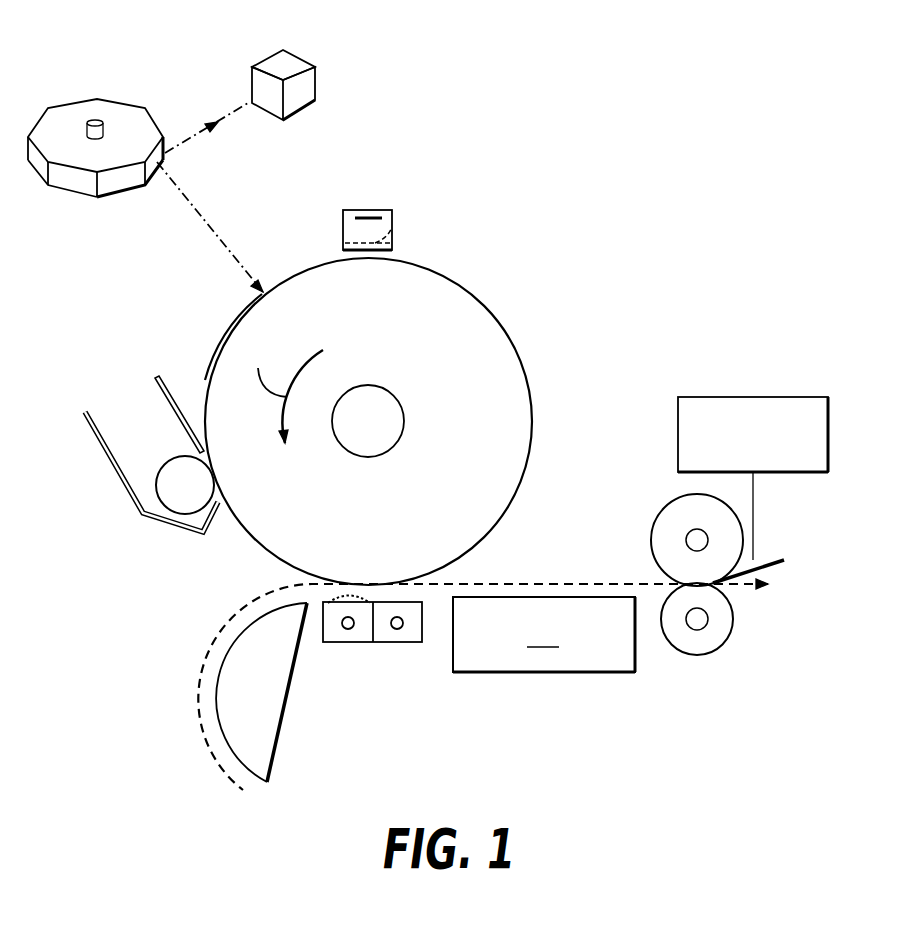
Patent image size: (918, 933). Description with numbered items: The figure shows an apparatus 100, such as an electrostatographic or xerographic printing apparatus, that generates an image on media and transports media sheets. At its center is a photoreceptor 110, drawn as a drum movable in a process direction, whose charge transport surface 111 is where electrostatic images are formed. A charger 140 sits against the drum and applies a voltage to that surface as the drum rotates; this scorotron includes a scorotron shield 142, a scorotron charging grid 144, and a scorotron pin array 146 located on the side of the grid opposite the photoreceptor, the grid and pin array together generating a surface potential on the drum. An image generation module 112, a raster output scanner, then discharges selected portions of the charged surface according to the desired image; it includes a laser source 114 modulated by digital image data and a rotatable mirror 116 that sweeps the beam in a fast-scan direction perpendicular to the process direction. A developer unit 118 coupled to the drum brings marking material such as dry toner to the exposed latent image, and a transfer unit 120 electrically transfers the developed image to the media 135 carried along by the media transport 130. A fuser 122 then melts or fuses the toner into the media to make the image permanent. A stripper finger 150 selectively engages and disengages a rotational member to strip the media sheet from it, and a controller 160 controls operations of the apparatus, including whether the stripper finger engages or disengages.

The apparatus 100 is at (533, 157).
The photoreceptor 110 is at (218, 357).
The charge transport surface 111 is at (220, 304).
The image generation module 112 is at (65, 92).
The laser source 114 is at (287, 60).
The rotatable mirror 116 is at (120, 100).
The developer unit 118 is at (120, 398).
The transfer unit 120 is at (348, 642).
The fuser 122 is at (662, 510).
The media transport 130 is at (283, 725).
The media 135 is at (195, 697).
The charger 140 is at (307, 218).
The scorotron shield 142 is at (380, 210).
The scorotron charging grid 144 is at (392, 227).
The scorotron pin array 146 is at (362, 217).
The stripper finger 150 is at (773, 560).
The controller 160 is at (752, 397).